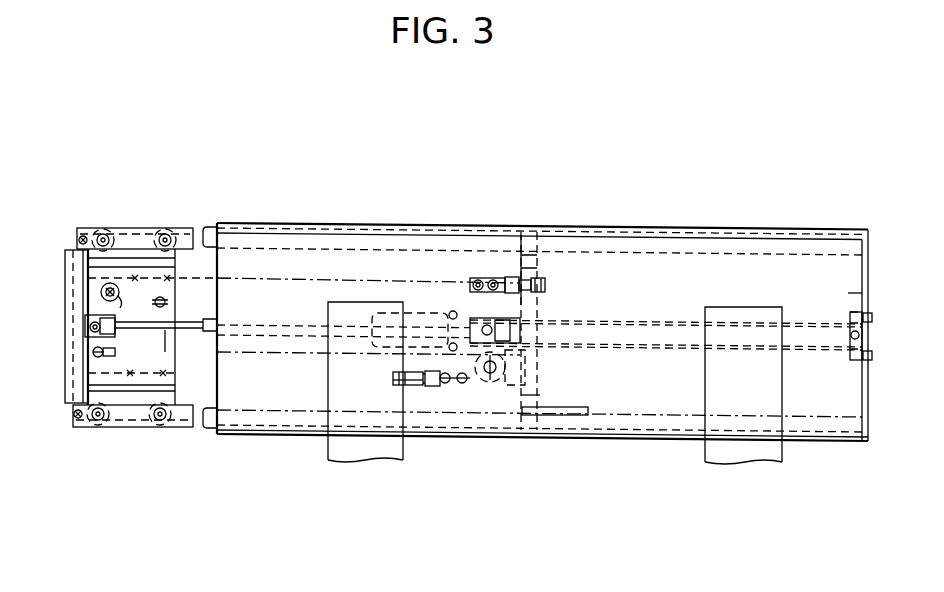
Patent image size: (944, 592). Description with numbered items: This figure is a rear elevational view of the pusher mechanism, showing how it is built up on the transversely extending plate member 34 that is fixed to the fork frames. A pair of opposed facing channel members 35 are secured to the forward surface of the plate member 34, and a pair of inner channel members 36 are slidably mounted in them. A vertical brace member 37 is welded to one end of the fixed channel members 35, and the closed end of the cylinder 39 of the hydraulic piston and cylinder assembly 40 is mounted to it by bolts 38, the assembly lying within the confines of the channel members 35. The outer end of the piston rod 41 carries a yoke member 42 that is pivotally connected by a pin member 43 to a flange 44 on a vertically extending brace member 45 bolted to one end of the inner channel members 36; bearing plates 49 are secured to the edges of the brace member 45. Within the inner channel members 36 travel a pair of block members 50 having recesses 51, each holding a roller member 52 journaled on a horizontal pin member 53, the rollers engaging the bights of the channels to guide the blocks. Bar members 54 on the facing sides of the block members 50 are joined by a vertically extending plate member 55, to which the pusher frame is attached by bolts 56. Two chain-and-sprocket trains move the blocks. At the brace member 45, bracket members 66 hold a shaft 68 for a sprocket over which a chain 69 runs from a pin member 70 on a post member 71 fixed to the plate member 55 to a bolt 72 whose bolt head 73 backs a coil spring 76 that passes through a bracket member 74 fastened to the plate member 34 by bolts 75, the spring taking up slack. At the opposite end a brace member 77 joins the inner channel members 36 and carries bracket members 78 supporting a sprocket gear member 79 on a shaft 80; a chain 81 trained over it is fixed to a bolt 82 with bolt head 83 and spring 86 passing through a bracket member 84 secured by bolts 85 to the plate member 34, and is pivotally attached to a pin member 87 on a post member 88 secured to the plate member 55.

The plate member 34 is at (866, 294).
The channel members 35 is at (222, 225).
The channel members 36 is at (208, 228).
The vertical brace member 37 is at (866, 272).
The bolts 38 is at (874, 356).
The cylinder 39 is at (655, 322).
The hydraulic piston and cylinder assembly 40 is at (620, 316).
The piston rod 41 is at (208, 321).
The yoke member 42 is at (85, 318).
The pin member 43 is at (92, 332).
The flange 44 is at (84, 328).
The brace member 45 is at (82, 298).
The bearing plates 49 is at (68, 255).
The block members 50 is at (176, 259).
The recesses 51 is at (106, 228).
The roller member 52 is at (82, 230).
The pin member 53 is at (128, 228).
The bar members 54 is at (176, 268).
The plate member 55 is at (168, 355).
The bolts 56 is at (166, 281).
The bracket members 66 is at (121, 304).
The shaft 68 is at (102, 290).
The chain 69 is at (262, 278).
The pin member 70 is at (166, 303).
The post member 71 is at (159, 337).
The bolt 72 is at (477, 280).
The bolt head 73 is at (546, 285).
The bracket member 74 is at (495, 280).
The bolts 75 is at (487, 293).
The coil spring 76 is at (533, 283).
The brace member 77 is at (530, 390).
The bracket members 78 is at (515, 370).
The sprocket gear member 79 is at (486, 380).
The shaft 80 is at (512, 357).
The chain 81 is at (300, 355).
The bolt 82 is at (428, 386).
The bolt head 83 is at (393, 376).
The bracket member 84 is at (430, 372).
The bolts 85 is at (447, 384).
The spring 86 is at (395, 386).
The pin member 87 is at (110, 351).
The post member 88 is at (98, 357).